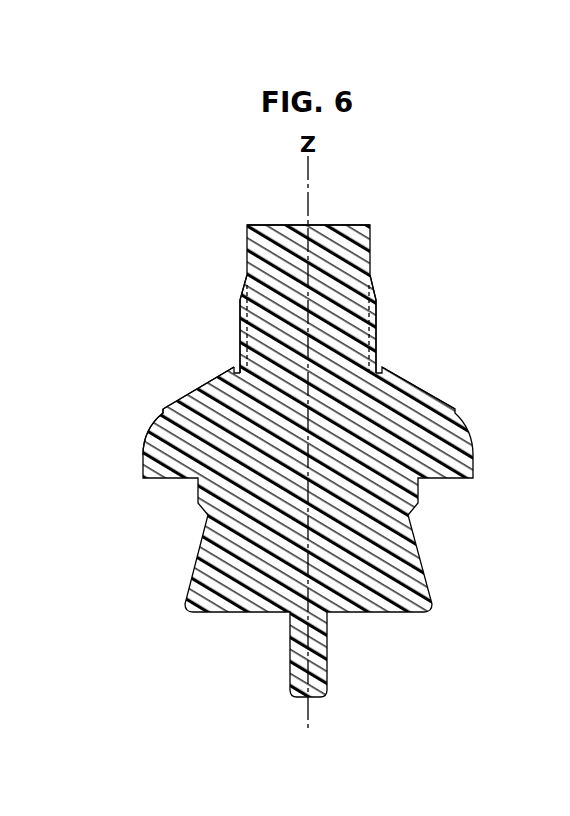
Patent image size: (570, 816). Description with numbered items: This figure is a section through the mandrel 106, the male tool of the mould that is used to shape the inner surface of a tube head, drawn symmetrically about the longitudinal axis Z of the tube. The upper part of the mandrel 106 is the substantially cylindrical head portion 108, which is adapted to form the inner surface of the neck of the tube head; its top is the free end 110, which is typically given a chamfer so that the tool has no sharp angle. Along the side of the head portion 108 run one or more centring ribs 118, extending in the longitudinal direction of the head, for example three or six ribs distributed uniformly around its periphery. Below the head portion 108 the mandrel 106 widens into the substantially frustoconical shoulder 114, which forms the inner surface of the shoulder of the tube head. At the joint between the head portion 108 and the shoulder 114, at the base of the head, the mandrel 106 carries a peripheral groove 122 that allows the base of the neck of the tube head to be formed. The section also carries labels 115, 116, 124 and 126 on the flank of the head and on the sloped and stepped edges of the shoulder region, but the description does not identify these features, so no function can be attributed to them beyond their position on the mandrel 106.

The mandrel 106 is at (405, 298).
The head portion 108 is at (370, 246).
The free end 110 is at (333, 224).
The shoulder 114 is at (447, 402).
The side surface of electrode tip 115 is at (376, 343).
The sloped shoulder surface 116 is at (197, 385).
The centring ribs 118 is at (240, 310).
The peripheral groove 122 is at (232, 358).
The sloped shoulder surface 124 is at (413, 380).
The step / rim 126 is at (153, 403).